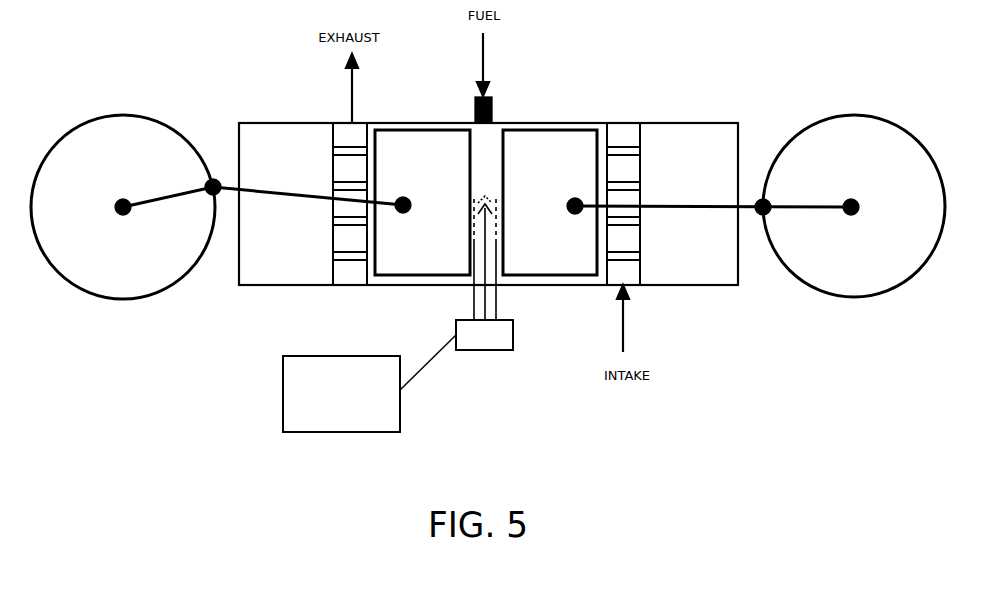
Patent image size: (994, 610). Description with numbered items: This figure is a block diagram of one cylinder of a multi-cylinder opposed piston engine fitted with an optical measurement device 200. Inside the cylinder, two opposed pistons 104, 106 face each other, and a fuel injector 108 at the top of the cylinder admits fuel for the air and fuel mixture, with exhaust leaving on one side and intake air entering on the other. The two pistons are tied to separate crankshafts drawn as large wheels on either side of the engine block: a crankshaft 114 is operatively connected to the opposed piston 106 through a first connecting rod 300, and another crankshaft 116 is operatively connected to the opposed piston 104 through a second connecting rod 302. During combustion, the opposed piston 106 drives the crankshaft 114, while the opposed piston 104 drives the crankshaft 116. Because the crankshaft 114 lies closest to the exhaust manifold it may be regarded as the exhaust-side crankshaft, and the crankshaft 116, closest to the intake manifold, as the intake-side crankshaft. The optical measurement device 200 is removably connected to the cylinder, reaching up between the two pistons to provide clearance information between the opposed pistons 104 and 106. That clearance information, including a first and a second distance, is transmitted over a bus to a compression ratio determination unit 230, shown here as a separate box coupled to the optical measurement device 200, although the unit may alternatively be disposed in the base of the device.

The opposed piston 104 is at (543, 276).
The opposed piston 106 is at (408, 276).
The fuel injector 108 is at (492, 104).
The crankshaft 114 is at (115, 114).
The crankshaft 116 is at (847, 112).
The optical measurement device 200 is at (528, 331).
The compression ratio determination unit 230 is at (369, 383).
The first connecting rod 300 is at (250, 190).
The second connecting rod 302 is at (673, 206).